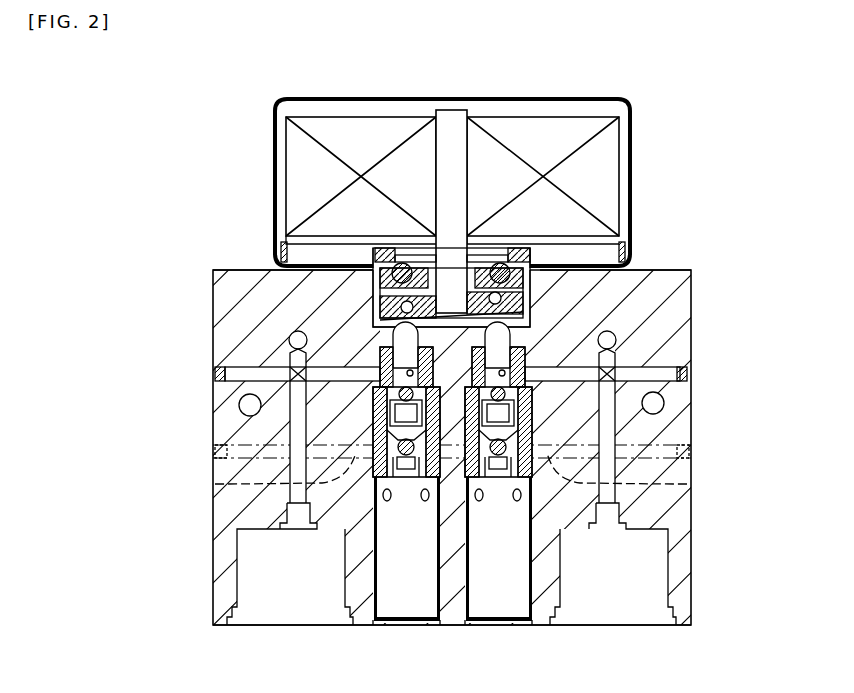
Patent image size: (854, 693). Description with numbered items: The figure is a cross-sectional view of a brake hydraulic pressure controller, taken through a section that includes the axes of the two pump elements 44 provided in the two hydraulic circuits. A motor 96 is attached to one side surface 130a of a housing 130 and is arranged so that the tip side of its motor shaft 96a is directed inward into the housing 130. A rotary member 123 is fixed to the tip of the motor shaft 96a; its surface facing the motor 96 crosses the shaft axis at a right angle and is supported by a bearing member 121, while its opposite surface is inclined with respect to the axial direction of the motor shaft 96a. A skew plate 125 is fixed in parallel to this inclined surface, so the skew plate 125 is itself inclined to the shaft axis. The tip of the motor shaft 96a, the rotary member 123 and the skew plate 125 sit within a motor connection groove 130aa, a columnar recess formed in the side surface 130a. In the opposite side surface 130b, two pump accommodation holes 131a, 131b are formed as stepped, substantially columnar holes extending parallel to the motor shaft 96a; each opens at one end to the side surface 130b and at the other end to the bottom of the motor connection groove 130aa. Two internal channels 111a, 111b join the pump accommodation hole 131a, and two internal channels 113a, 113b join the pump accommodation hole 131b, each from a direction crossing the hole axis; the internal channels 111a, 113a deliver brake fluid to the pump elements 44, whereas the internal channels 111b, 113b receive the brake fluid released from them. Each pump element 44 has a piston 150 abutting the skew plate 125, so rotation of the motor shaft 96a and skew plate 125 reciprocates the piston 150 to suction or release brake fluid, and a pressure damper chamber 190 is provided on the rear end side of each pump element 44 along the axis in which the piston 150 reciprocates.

The motor 96 is at (632, 120).
The motor shaft 96a is at (460, 153).
The bearing member 121 is at (417, 260).
The rotary member 123 is at (392, 288).
The skew plate 125 is at (386, 307).
The housing 130 is at (678, 303).
The side surface 130a is at (672, 270).
The motor connection groove 130aa is at (548, 322).
The side surface 130b is at (550, 626).
The piston 150 is at (691, 270).
The internal channel 111a is at (380, 333).
The internal channel 111b is at (215, 485).
The internal channel 113a is at (563, 360).
The internal channel 113b is at (687, 485).
The pump element 44 is at (363, 400).
The pump accommodation hole 131a is at (377, 550).
The pump accommodation hole 131b is at (532, 550).
The pressure damper chamber 190 is at (488, 603).